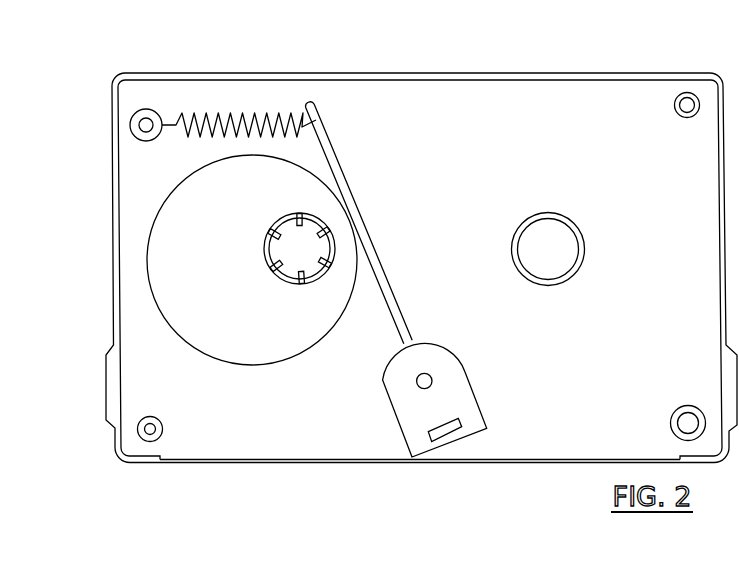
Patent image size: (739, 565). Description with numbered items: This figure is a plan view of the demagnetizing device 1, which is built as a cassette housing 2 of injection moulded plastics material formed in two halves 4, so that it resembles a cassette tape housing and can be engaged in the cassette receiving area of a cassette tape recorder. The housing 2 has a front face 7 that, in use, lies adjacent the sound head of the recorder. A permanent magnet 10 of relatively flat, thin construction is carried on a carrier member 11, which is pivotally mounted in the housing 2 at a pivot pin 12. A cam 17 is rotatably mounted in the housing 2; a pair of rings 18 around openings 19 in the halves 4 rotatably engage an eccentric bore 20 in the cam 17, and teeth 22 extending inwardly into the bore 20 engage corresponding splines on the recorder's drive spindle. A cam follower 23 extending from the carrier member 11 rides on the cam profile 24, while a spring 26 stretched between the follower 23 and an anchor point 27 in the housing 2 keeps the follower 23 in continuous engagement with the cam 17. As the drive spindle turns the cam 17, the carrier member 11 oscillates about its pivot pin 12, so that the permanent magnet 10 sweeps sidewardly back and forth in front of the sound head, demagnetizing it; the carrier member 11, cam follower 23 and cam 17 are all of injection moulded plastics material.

The device 1 is at (583, 55).
The cassette housing 2 is at (638, 100).
The halves 4 is at (440, 100).
The front face 7 is at (235, 463).
The permanent magnet 10 is at (446, 431).
The carrier member 11 is at (417, 445).
The pivot pin 12 is at (416, 381).
The cam 17 is at (198, 332).
The rings 18 is at (317, 288).
The openings 19 is at (297, 250).
The eccentric bore 20 is at (296, 282).
The teeth 22 is at (272, 232).
The cam follower 23 is at (338, 160).
The cam profile 24 is at (257, 367).
The spring 26 is at (236, 42).
The anchor point 27 is at (148, 118).